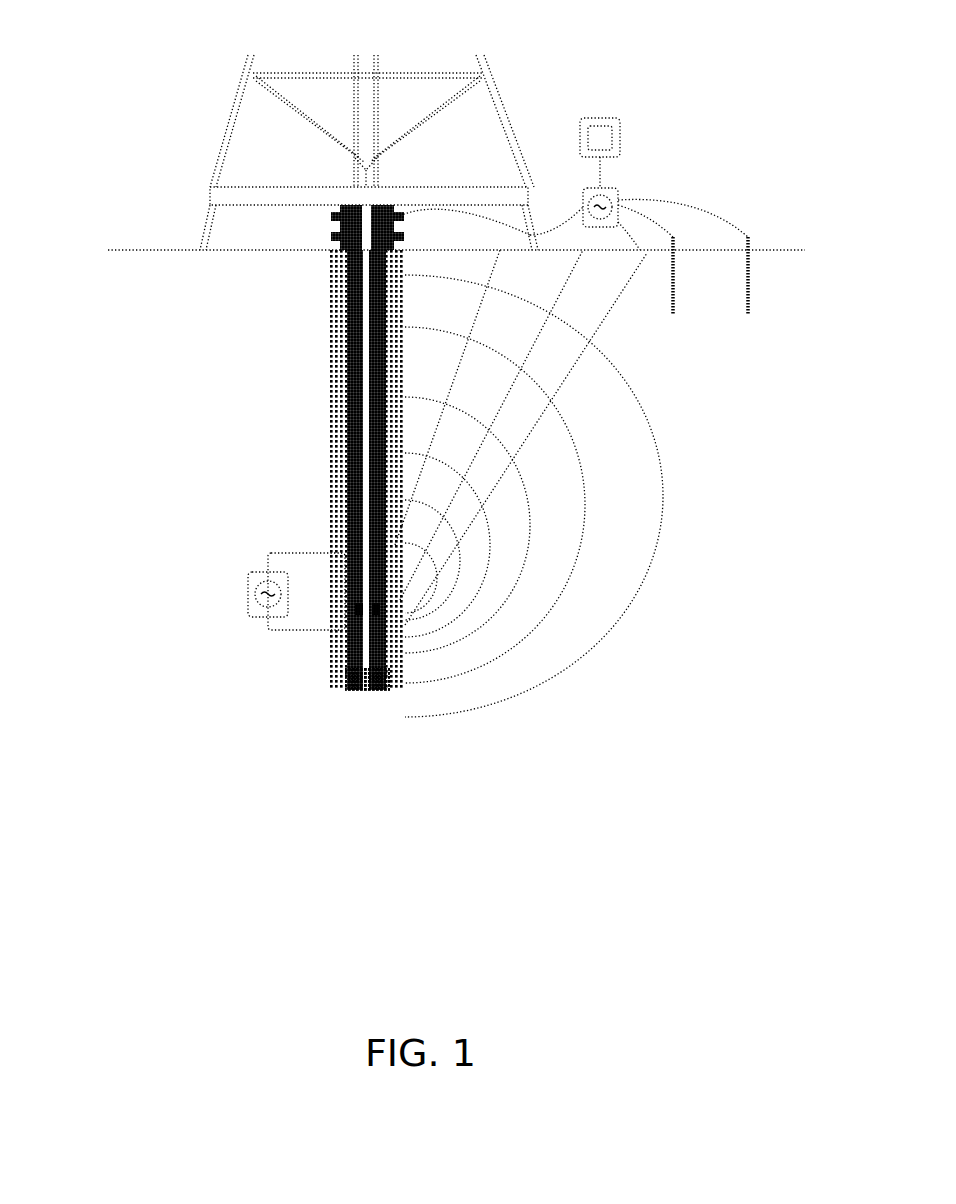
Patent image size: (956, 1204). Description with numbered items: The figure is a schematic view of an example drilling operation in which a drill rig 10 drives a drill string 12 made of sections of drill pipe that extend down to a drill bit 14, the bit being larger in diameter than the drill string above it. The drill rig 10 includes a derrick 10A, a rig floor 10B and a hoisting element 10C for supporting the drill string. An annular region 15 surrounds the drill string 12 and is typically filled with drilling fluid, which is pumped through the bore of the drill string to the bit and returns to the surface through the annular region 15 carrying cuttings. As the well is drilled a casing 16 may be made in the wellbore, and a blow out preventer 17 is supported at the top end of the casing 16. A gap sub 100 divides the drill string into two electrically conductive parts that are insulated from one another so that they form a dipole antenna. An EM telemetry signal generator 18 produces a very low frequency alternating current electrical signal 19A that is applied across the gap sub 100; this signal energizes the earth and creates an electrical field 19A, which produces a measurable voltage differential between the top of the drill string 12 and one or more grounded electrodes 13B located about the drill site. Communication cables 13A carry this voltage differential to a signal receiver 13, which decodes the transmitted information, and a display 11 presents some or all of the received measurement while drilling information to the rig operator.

The drill rig 10 is at (101, 119).
The derrick 10A is at (402, 152).
The rig floor 10B is at (318, 180).
The traveling block / hook 10C is at (317, 168).
The display 11 is at (634, 128).
The drill string 12 is at (323, 470).
The signal receiver 13 is at (635, 184).
The communication cables 13A is at (672, 197).
The grounded electrodes 13B is at (765, 245).
The drill bit 14 is at (324, 695).
The annular region 15 is at (306, 470).
The casing 16 is at (322, 470).
The blow out preventer 17 is at (324, 241).
The EM telemetry signal generator 18 is at (260, 591).
The electrical signal / electrical field 19A is at (460, 562).
The gap sub 100 is at (420, 607).